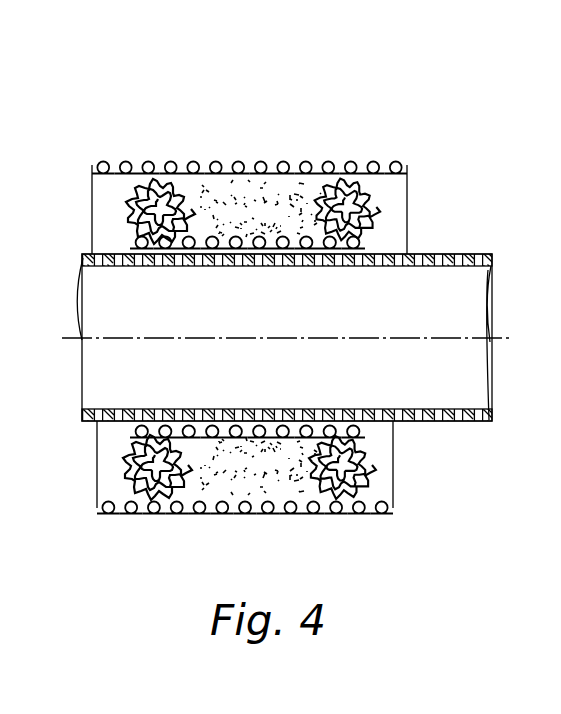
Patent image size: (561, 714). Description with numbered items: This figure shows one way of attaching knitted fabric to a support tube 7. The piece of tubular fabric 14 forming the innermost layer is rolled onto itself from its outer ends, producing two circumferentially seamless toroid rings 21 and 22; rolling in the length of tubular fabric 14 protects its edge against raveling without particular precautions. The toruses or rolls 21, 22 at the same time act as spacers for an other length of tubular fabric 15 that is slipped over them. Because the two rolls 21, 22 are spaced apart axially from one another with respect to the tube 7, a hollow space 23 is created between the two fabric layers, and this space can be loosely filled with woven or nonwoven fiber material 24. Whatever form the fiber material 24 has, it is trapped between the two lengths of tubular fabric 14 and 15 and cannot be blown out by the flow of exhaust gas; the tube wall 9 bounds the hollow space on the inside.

The tube 7 is at (472, 388).
The tube wall 9 is at (115, 408).
The tubular fabric 14 is at (396, 218).
The tubular fabric 15 is at (310, 168).
The toroid ring 21 is at (372, 198).
The toroid ring 22 is at (122, 203).
The hollow space 23 is at (170, 506).
The fiber material 24 is at (232, 200).